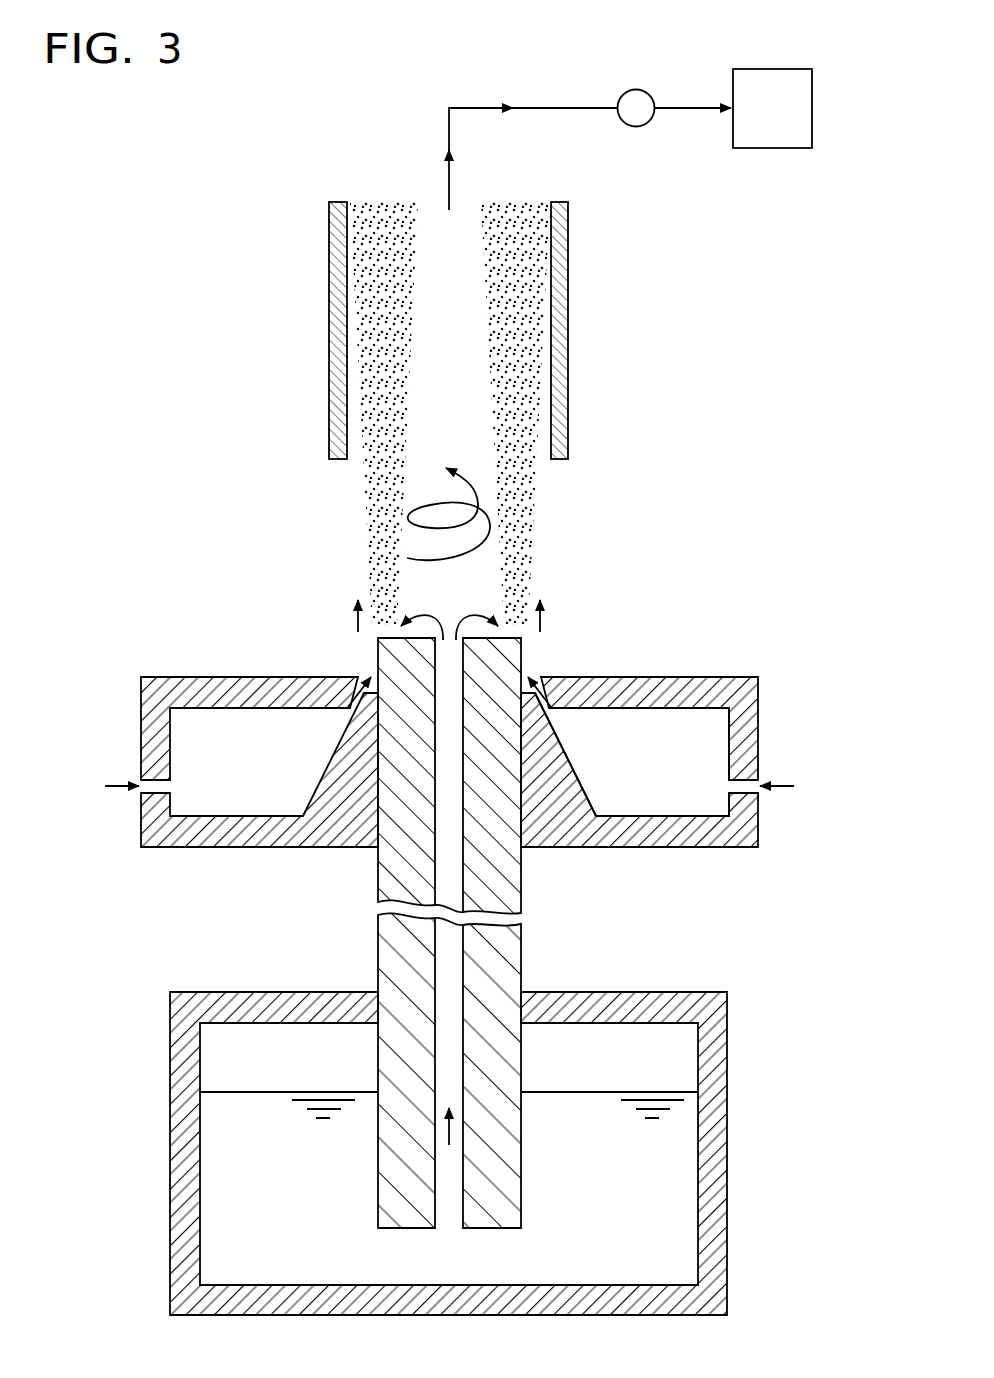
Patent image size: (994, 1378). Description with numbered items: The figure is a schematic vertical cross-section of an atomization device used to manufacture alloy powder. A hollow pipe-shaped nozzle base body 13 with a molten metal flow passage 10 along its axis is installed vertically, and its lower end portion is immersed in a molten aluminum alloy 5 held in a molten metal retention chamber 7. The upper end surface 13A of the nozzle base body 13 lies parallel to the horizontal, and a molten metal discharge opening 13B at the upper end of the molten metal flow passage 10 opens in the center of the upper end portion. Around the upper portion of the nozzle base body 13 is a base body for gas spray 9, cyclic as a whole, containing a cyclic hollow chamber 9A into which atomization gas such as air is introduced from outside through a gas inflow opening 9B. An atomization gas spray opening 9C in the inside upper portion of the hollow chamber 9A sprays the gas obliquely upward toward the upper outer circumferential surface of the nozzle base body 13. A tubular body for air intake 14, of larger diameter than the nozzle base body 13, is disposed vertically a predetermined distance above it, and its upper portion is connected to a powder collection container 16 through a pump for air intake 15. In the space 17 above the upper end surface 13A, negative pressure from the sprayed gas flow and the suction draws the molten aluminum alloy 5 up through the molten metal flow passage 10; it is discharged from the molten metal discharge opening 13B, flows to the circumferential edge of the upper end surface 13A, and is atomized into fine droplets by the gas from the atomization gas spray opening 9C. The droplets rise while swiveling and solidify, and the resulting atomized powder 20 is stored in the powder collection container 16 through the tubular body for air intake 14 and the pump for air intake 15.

The molten aluminum alloy 5 is at (682, 1210).
The molten metal retention chamber 7 is at (667, 992).
The base body for gas spray 9 is at (668, 677).
The hollow chamber 9A is at (705, 738).
The gas inflow opening 9B is at (160, 785).
The atomization gas spray opening 9C is at (347, 703).
The molten metal flow passage 10 is at (490, 957).
The nozzle base body 13 is at (448, 880).
The upper end surface 13A is at (508, 628).
The molten metal discharge opening 13B is at (448, 640).
The tubular body for air intake 14 is at (566, 300).
The pump for air intake 15 is at (636, 90).
The powder collection container 16 is at (775, 69).
The space 17 is at (426, 598).
The atomized powder 20 is at (522, 358).